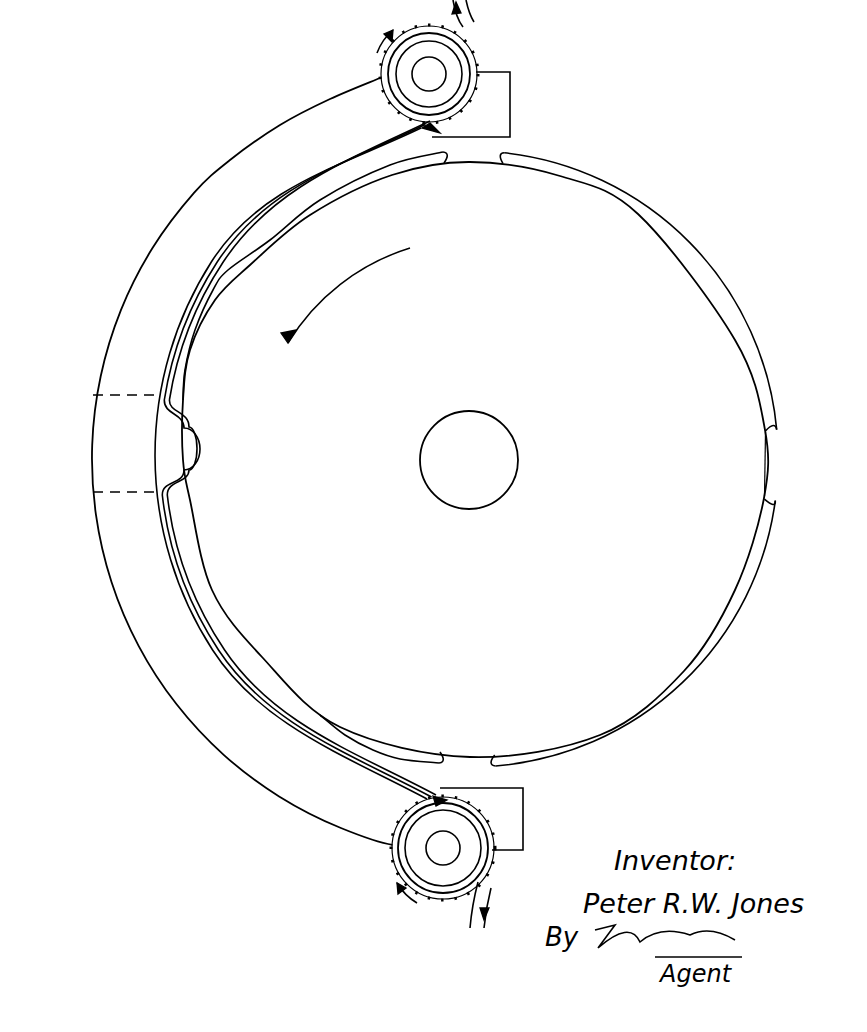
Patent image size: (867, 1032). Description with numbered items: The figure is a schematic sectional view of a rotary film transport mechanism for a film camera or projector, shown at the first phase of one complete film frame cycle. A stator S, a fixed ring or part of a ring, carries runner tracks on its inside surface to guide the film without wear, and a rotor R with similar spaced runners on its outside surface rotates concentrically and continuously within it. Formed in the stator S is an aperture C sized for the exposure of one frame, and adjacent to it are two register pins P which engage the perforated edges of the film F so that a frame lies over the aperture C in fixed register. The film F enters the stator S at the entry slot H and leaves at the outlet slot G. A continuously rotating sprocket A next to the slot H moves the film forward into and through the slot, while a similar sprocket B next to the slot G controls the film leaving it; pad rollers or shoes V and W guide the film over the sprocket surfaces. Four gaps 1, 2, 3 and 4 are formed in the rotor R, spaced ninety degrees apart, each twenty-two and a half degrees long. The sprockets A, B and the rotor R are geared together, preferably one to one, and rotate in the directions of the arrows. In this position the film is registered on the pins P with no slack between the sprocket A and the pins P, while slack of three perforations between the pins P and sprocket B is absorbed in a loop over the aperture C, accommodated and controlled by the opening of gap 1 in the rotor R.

The film sprocket A is at (398, 70).
The pad roller V is at (498, 107).
The entry slot H is at (442, 129).
The rotor gap 2 is at (480, 158).
The stator S is at (222, 190).
The rotor R is at (605, 212).
The film F is at (215, 266).
The register pins P is at (170, 380).
The aperture C is at (112, 432).
The rotor gap 1 is at (167, 456).
The rotor gap 3 is at (772, 468).
The outlet slot G is at (420, 797).
The rotor gap 4 is at (468, 765).
The pad roller W is at (510, 821).
The film sprocket B is at (417, 866).